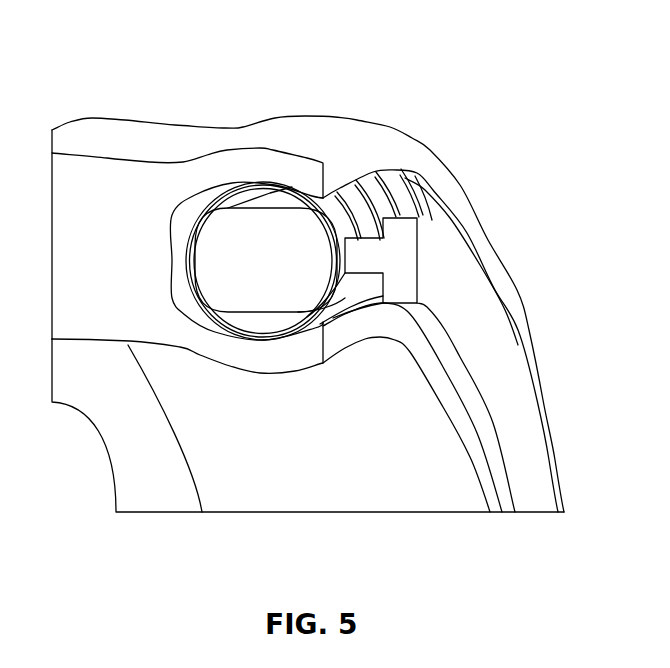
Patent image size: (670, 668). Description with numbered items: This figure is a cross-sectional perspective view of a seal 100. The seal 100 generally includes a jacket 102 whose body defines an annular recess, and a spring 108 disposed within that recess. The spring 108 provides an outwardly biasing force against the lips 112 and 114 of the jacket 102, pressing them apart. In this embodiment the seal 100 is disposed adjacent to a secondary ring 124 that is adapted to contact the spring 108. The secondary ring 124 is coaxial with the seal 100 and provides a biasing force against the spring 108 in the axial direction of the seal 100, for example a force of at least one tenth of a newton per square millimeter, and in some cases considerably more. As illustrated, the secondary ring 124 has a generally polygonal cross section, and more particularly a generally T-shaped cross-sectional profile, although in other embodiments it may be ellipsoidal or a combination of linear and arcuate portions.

The seal 100 is at (194, 52).
The jacket 102 is at (265, 493).
The spring 108 is at (397, 172).
The lip 112 is at (347, 135).
The lip 114 is at (478, 514).
The secondary ring 124 is at (543, 514).